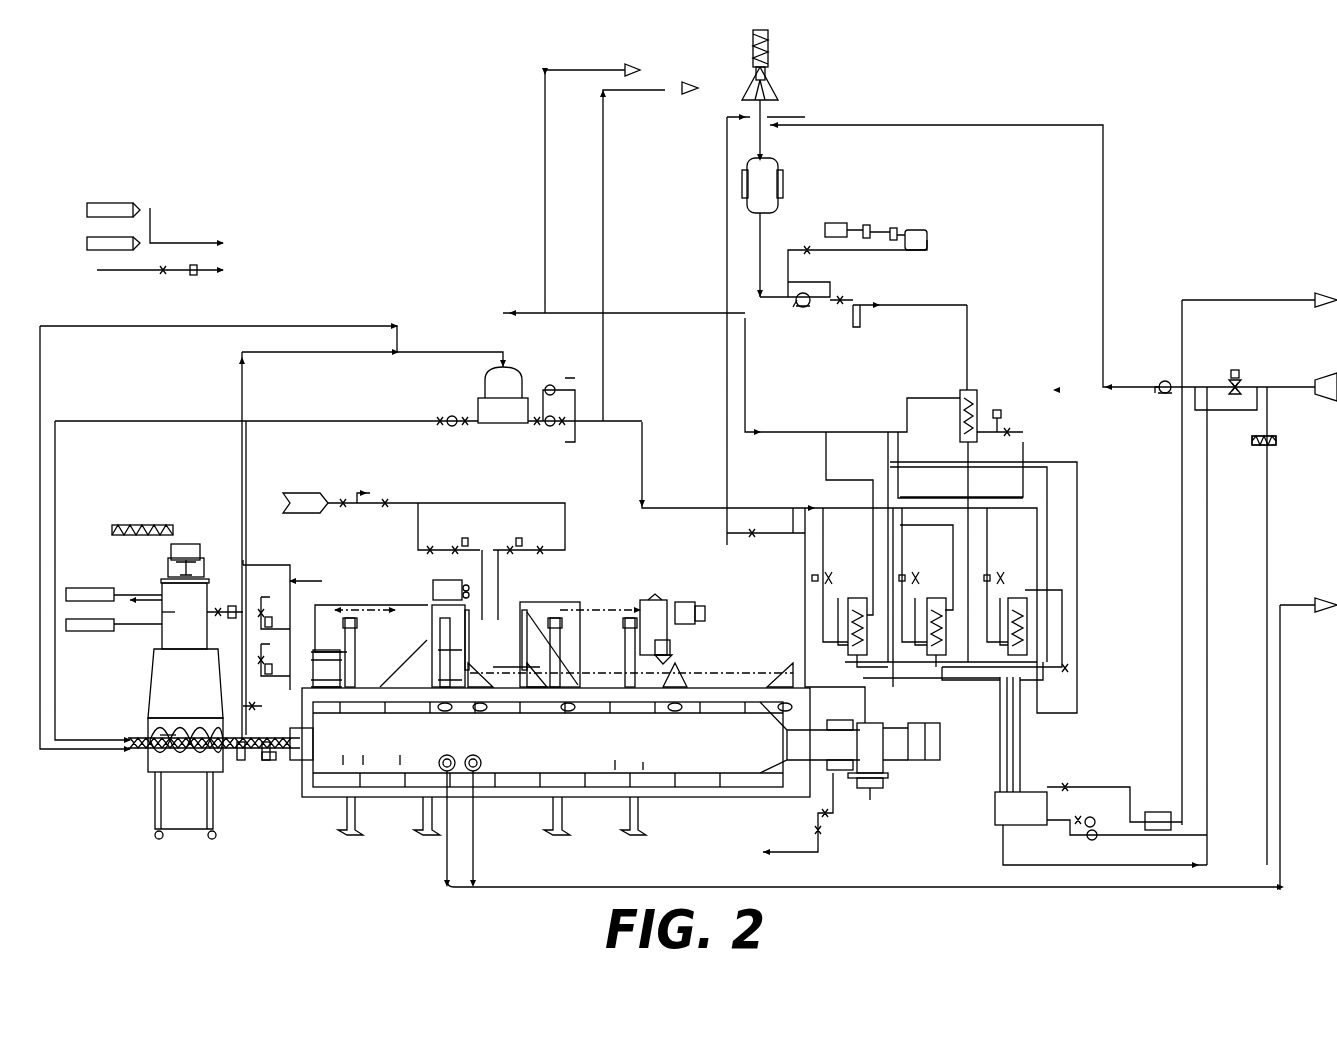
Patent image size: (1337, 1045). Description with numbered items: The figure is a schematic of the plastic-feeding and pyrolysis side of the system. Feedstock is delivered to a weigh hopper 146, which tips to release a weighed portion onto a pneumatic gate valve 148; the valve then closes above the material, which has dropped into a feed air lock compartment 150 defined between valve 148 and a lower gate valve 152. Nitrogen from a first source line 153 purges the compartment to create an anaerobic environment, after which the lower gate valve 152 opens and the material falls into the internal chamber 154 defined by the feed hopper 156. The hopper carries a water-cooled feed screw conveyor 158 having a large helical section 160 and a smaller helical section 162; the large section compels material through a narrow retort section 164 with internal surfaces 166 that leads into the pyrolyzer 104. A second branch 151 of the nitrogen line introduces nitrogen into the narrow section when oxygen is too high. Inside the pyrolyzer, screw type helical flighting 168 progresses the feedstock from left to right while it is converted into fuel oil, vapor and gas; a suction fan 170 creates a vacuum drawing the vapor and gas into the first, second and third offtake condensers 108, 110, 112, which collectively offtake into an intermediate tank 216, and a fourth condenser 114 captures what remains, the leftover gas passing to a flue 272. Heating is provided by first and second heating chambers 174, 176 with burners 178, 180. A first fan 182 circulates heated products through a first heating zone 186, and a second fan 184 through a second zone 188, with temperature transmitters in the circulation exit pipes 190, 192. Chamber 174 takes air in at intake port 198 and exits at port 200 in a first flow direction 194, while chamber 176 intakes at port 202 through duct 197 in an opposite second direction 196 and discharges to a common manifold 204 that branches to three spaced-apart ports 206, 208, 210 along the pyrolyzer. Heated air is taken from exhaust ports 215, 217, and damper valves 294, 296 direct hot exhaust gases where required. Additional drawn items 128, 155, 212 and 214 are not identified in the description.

The pyrolyzer 104 is at (515, 825).
The first offtake condenser 108 is at (858, 598).
The second offtake condenser 110 is at (936, 598).
The third offtake condenser 112 is at (1017, 598).
The fourth condenser 114 is at (978, 408).
The outlet tee 128 is at (867, 788).
The weigh hopper 146 is at (186, 548).
The pneumatic gate valve 148 is at (172, 585).
The feed air lock compartment 150 is at (182, 600).
The second branch 151 is at (265, 665).
The lower gate valve 152 is at (163, 617).
The first source line 153 is at (288, 568).
The internal chamber 154 is at (157, 668).
The valve 155 is at (232, 600).
The feed hopper 156 is at (135, 738).
The water-cooled feed screw conveyor 158 is at (230, 745).
The large helical section 160 is at (185, 745).
The smaller helical section 162 is at (173, 730).
The narrow retort section 164 is at (250, 760).
The internal surfaces 166 is at (240, 750).
The screw type helical flighting 168 is at (405, 760).
The suction fan 170 is at (800, 308).
The first heating chamber 174 is at (360, 635).
The second heating chamber 176 is at (575, 638).
The burner 178 is at (447, 638).
The burner 180 is at (528, 640).
The first fan 182 is at (440, 578).
The second fan 184 is at (682, 602).
The first heating zone 186 is at (480, 771).
The second zone 188 is at (615, 762).
The heating chamber circulation exit pipe 190 is at (323, 677).
The heating chamber circulation exit pipe 192 is at (662, 652).
The first flow direction 194 is at (385, 610).
The second flow direction 196 is at (605, 620).
The duct 197 is at (494, 667).
The intake port 198 is at (448, 709).
The port 200 is at (331, 743).
The port 202 is at (484, 709).
The common manifold 204 is at (723, 672).
The port 206 is at (572, 709).
The port 208 is at (677, 711).
The port 210 is at (782, 712).
The burners 212 is at (368, 760).
The chamber wall 214 is at (643, 762).
The pyrolyzer exhaust port 215 is at (445, 772).
The intermediate tank 216 is at (1027, 803).
The pyrolyzer exhaust port 217 is at (468, 772).
The flue 272 is at (765, 80).
The damper valve 294 is at (1240, 372).
The damper valve 296 is at (1276, 440).